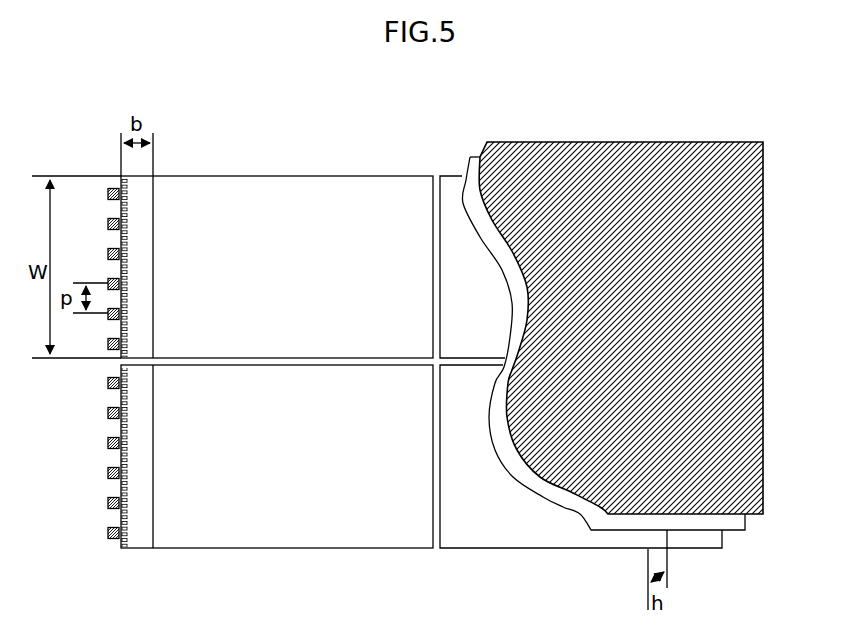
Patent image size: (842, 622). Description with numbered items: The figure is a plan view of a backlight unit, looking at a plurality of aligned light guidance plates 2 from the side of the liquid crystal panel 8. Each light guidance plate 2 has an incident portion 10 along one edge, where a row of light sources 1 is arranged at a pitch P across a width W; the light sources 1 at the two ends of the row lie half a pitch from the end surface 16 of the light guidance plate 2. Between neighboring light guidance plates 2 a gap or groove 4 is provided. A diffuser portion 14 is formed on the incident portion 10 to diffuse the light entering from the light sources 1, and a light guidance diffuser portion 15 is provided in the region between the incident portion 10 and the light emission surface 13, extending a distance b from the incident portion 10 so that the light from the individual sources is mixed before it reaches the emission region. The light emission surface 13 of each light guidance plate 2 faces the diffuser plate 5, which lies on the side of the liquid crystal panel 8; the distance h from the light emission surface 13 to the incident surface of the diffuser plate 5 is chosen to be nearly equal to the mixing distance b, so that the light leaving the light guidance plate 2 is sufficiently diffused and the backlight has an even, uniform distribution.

The light source 1 is at (108, 502).
The light guidance plate 2 is at (354, 188).
The groove 4 is at (437, 437).
The diffuser plate 5 is at (560, 502).
The liquid crystal panel 8 is at (755, 245).
The incident portion 10 is at (432, 200).
The light emission surface 13 is at (248, 252).
The diffuser portion 14 is at (125, 515).
The light guidance diffuser portion 15 is at (137, 487).
The end surface 16 is at (140, 176).